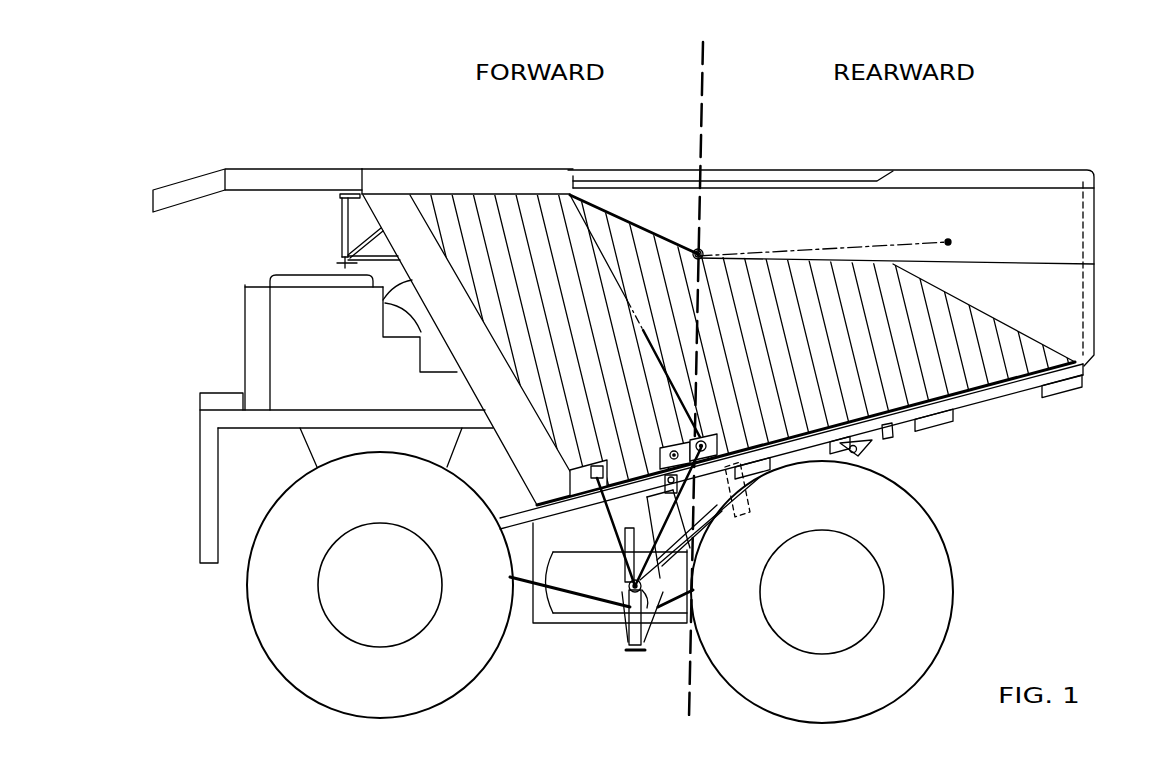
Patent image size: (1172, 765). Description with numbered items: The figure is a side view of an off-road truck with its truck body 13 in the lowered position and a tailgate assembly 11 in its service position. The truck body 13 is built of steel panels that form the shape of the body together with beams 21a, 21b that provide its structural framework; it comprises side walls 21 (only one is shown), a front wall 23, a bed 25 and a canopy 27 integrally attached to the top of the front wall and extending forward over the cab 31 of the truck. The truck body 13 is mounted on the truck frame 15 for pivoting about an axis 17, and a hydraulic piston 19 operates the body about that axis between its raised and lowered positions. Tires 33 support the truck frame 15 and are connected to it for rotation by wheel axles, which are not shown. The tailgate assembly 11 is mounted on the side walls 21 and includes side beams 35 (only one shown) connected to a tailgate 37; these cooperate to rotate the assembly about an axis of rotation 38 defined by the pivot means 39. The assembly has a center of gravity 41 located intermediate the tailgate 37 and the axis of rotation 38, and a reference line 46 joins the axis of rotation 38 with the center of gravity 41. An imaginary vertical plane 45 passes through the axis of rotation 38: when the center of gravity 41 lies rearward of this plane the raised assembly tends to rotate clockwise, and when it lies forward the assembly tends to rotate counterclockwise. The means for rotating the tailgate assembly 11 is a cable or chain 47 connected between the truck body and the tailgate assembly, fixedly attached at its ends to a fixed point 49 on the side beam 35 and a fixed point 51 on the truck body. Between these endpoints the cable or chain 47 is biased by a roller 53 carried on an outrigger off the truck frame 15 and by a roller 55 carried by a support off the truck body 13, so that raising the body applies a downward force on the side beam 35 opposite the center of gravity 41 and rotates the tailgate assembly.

The tailgate assembly 11 is at (1007, 172).
The truck body 13 is at (420, 168).
The truck frame 15 is at (558, 613).
The axis 17 is at (858, 450).
The hydraulic piston 19 is at (645, 524).
The side walls 21 is at (770, 330).
The beam 21a is at (385, 175).
The beam 21b is at (488, 377).
The front wall 23 is at (383, 300).
The bed 25 is at (997, 372).
The canopy 27 is at (275, 180).
The cab 31 is at (247, 350).
The tires 33 is at (273, 622).
The side beam 35 is at (922, 200).
The tailgate 37 is at (1097, 230).
The axis of rotation 38 is at (702, 248).
The pivot means 39 is at (697, 240).
The center of gravity 41 is at (951, 242).
The imaginary vertical plane 45 is at (703, 87).
The reference line 46 is at (795, 246).
The cable or chain 47 is at (662, 362).
The fixed point 49 is at (566, 191).
The fixed point 51 is at (596, 466).
The roller 53 is at (628, 586).
The roller 55 is at (704, 438).